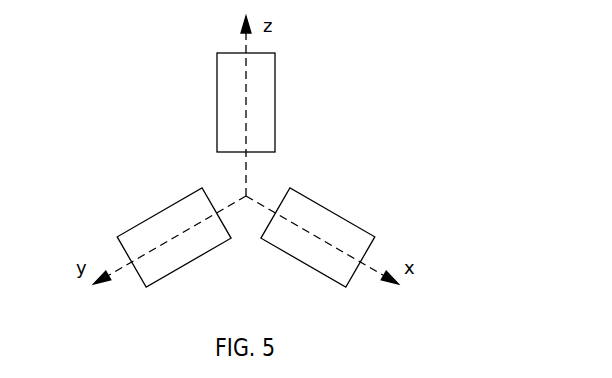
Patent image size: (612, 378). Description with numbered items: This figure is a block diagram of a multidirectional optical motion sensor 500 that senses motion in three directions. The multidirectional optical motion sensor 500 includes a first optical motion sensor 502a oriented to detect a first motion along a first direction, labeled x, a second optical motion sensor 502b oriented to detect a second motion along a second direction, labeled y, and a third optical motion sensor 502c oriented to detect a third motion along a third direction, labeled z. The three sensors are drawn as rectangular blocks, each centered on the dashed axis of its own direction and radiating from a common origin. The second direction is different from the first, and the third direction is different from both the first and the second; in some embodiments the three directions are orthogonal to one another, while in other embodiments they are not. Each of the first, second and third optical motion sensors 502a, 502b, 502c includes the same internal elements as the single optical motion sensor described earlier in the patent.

The multidirectional optical motion sensor 500 is at (418, 38).
The first optical motion sensor 502a is at (320, 212).
The second optical motion sensor 502b is at (164, 213).
The third optical motion sensor 502c is at (218, 96).